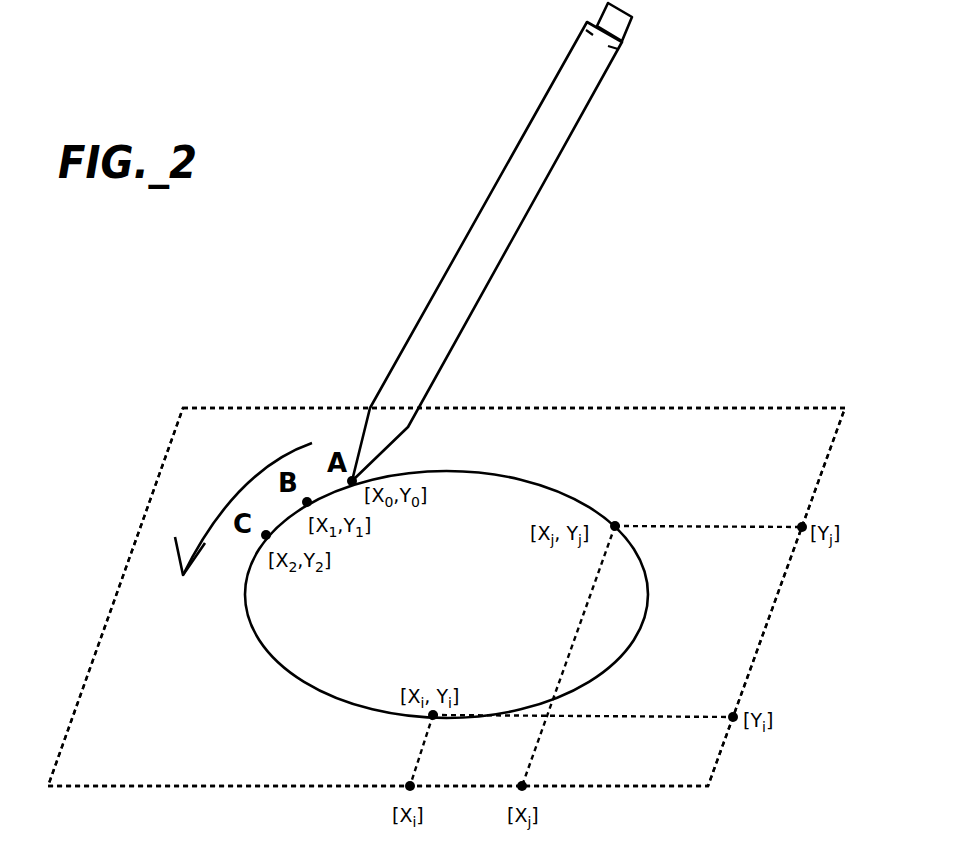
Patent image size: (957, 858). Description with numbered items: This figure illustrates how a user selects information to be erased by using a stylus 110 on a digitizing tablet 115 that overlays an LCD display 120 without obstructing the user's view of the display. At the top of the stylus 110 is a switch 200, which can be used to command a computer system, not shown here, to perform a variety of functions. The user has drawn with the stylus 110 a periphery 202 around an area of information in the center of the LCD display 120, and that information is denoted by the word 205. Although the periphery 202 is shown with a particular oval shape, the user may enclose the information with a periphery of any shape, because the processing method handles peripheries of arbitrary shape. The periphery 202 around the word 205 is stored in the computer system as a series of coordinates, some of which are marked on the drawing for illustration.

The stylus 110 is at (517, 233).
The switch 200 is at (605, 5).
The digitizing tablet 115 is at (165, 460).
The LCD display 120 is at (130, 555).
The periphery 202 is at (338, 698).
The word 205 is at (365, 610).